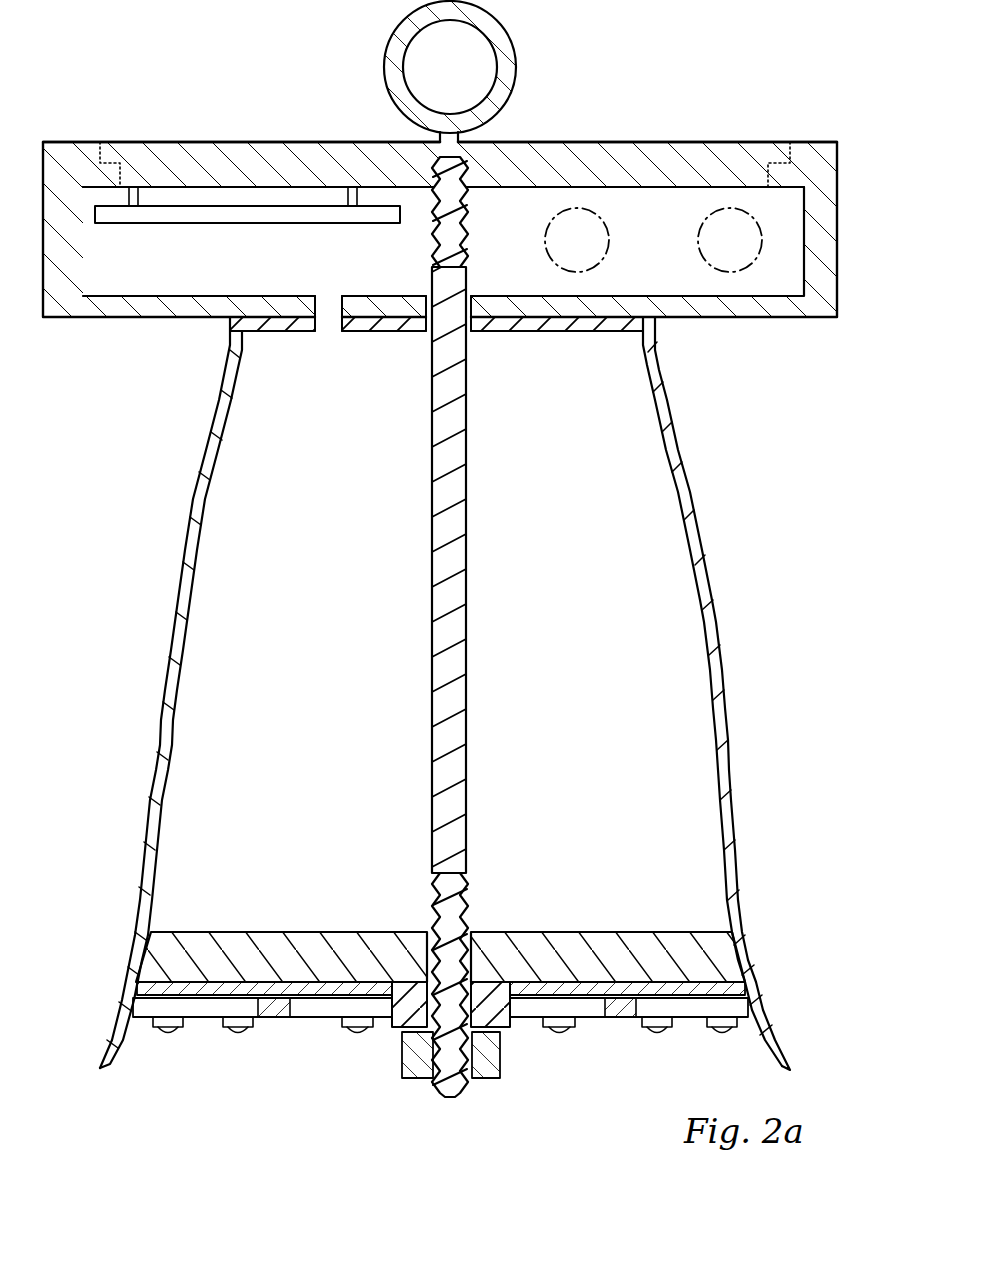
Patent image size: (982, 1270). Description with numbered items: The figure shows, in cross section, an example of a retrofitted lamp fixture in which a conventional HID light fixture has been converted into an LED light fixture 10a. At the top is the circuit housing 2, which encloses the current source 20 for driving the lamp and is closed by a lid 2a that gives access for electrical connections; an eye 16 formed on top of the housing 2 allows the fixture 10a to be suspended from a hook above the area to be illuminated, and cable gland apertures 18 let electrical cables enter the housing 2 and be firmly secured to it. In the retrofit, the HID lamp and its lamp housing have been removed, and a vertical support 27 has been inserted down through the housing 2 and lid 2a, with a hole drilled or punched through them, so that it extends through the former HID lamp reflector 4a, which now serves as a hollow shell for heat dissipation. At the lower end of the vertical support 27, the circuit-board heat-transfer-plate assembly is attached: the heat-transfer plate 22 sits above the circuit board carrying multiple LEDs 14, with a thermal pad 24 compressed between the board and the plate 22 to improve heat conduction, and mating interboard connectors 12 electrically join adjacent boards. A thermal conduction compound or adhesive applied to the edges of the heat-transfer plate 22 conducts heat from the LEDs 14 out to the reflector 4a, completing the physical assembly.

The circuit housing 2 is at (700, 317).
The lid 2a is at (560, 165).
The reflector 4a is at (688, 467).
The LED light fixture 10a is at (158, 496).
The interboard connector 12 is at (607, 1018).
The LEDs 14 is at (358, 1040).
The eye 16 is at (503, 27).
The cable gland apertures 18 is at (718, 272).
The current source 20 is at (283, 224).
The heat-transfer plate 22 is at (343, 955).
The thermal pad 24 is at (571, 990).
The vertical support 27 is at (450, 606).